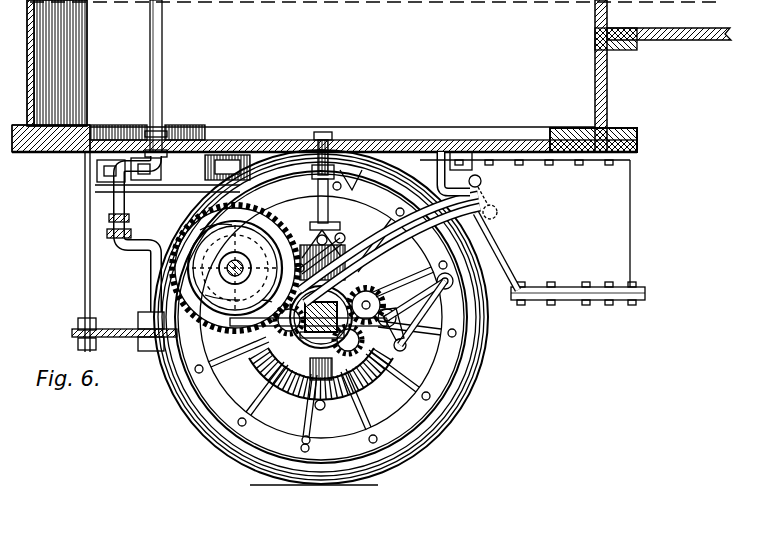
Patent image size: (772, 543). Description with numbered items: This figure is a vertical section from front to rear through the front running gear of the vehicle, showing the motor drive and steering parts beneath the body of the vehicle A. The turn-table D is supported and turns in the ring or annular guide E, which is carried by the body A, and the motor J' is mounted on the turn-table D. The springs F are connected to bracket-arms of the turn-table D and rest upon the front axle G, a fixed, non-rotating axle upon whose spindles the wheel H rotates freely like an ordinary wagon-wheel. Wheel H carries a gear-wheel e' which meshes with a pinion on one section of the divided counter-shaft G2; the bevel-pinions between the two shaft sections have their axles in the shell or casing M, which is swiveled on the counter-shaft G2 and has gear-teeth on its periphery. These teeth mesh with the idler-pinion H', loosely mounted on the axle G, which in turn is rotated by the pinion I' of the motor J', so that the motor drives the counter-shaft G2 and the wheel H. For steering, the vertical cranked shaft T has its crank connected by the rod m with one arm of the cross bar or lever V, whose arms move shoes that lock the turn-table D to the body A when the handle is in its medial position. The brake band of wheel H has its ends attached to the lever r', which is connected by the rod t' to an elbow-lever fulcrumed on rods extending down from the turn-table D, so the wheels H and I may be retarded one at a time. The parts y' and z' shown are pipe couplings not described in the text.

The vertical cranked shaft T is at (162, 57).
The rod m is at (264, 146).
The turn-table D is at (455, 143).
The ring or annular guide E is at (562, 130).
The body of the vehicle A is at (663, 76).
The cross bar or lever V is at (354, 175).
The pipe coupling y' is at (90, 207).
The pipe coupling z' is at (90, 233).
The springs F is at (214, 239).
The divided or two-part counter-shaft G2 is at (227, 267).
The front axle G is at (261, 298).
The shell or casing M is at (222, 299).
The rod t' is at (320, 238).
The wheel I is at (327, 240).
The pinion I' is at (415, 292).
The motor J' is at (557, 232).
The wheel H is at (321, 317).
The idler-pinion H' is at (313, 375).
The lever r' is at (289, 365).
The gear-wheel e' is at (358, 358).